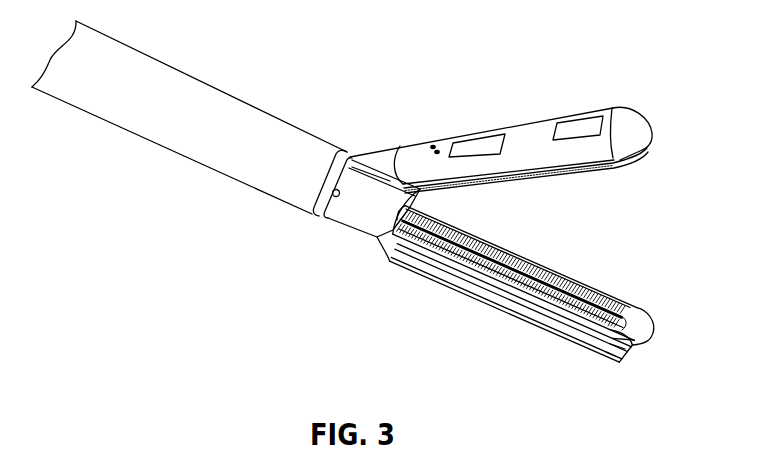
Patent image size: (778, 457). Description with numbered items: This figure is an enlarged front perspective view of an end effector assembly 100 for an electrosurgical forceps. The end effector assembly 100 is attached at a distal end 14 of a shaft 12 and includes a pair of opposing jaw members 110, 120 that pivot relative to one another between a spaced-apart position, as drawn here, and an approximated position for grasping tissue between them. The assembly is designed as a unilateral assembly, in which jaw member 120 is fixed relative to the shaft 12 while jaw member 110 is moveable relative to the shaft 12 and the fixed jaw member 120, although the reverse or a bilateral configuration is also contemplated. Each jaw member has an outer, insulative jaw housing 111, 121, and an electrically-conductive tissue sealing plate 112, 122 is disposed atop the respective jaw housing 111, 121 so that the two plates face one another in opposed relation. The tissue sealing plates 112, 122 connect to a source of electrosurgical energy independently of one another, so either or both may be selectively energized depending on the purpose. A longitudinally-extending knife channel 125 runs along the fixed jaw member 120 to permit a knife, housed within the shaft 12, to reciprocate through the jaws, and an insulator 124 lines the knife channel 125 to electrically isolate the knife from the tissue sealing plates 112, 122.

The end effector assembly 100 is at (615, 73).
The shaft 12 is at (130, 58).
The distal end of shaft 14 is at (262, 120).
The jaw member 110 is at (589, 111).
The jaw housing 111 is at (638, 122).
The tissue sealing plate 112 is at (548, 174).
The jaw member 120 is at (633, 357).
The jaw housing 121 is at (602, 337).
The tissue sealing plate 122 is at (627, 313).
The insulator 124 is at (577, 295).
The knife channel 125 is at (538, 286).